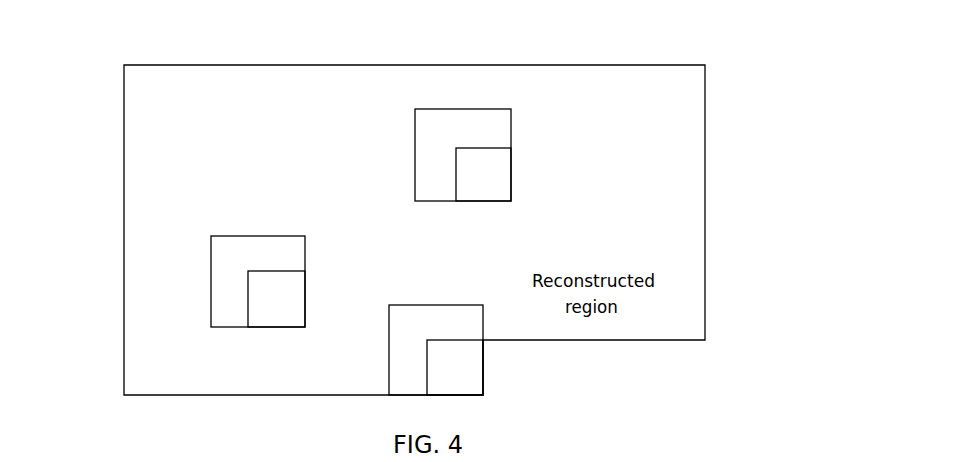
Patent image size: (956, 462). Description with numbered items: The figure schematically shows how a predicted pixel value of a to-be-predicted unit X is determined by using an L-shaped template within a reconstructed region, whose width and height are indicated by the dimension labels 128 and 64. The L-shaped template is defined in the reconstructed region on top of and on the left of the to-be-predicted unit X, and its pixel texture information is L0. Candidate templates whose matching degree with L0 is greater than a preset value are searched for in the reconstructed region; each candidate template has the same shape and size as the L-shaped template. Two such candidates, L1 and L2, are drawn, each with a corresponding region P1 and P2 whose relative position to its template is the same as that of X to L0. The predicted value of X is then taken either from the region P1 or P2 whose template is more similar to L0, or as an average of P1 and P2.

The width of reconstructed region in pixels 128 is at (704, 37).
The height of reconstructed region in pixels 64 is at (732, 338).
The pixel texture information of the L-shaped template L0 is at (436, 350).
The to-be-predicted unit X is at (455, 367).
The candidate template L1 is at (258, 281).
The region corresponding to L1 P1 is at (276, 299).
The candidate template L2 is at (463, 155).
The region corresponding to L2 P2 is at (483, 174).